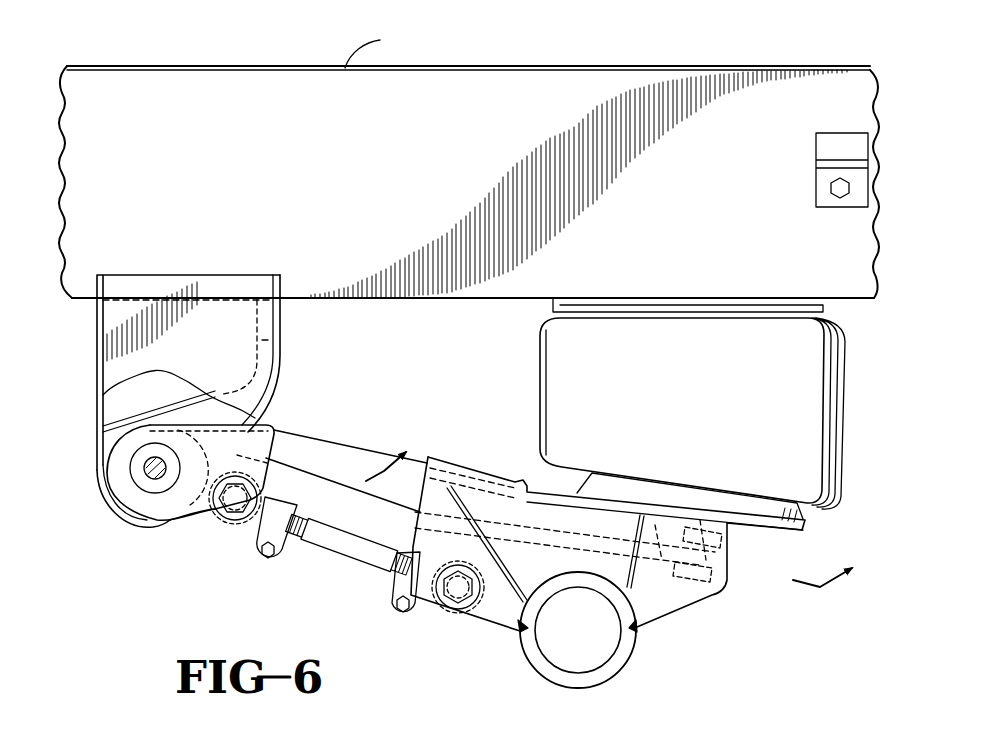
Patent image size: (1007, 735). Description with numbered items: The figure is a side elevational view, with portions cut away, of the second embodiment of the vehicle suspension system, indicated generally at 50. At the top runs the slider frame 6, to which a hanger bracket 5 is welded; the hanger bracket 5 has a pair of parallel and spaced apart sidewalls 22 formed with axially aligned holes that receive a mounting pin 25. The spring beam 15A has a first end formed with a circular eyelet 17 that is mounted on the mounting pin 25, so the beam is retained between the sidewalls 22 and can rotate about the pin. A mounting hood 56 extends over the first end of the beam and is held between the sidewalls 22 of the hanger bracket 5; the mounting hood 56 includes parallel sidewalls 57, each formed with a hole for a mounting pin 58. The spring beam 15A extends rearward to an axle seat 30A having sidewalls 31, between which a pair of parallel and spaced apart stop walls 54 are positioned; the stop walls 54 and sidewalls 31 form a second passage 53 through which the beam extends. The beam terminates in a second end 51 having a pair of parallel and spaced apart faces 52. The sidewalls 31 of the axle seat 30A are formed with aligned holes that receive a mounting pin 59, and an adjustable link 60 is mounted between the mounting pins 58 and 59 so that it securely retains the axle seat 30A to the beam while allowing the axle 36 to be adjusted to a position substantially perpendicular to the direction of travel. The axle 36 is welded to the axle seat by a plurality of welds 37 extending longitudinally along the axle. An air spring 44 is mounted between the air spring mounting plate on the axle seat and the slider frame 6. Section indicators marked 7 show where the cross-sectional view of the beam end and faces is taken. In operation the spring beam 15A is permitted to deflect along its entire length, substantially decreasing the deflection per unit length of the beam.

The hanger bracket 5 is at (252, 272).
The slider frame 6 is at (508, 66).
The section line 7 is at (608, 307).
The spring beam 15A is at (350, 458).
The circular eyelet 17 is at (193, 455).
The sidewalls 22 is at (262, 340).
The mounting pin 25 is at (148, 465).
The axle seat 30A is at (668, 620).
The sidewalls 31 is at (494, 612).
The axle 36 is at (600, 682).
The welds 37 is at (640, 630).
The air spring 44 is at (550, 380).
The suspension system 50 is at (320, 588).
The second end 51 is at (703, 603).
The faces 52 is at (733, 541).
The second passage 53 is at (668, 525).
The stop walls 54 is at (710, 532).
The mounting hood 56 is at (268, 428).
The sidewalls 57 is at (204, 503).
The mounting pin 58 is at (235, 502).
The mounting pin 59 is at (458, 594).
The adjustable link 60 is at (365, 555).